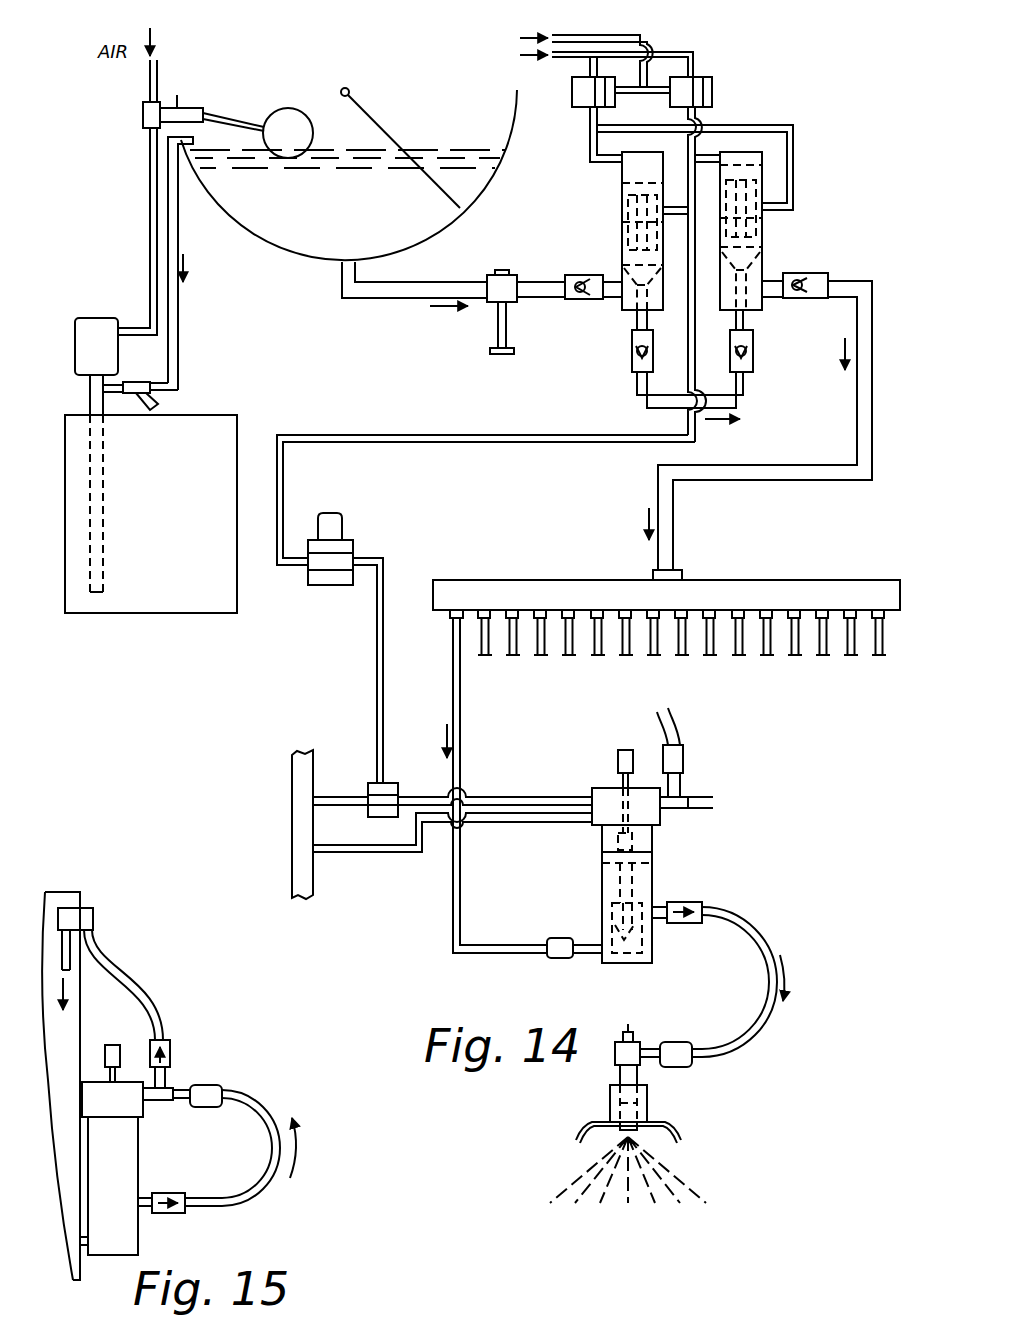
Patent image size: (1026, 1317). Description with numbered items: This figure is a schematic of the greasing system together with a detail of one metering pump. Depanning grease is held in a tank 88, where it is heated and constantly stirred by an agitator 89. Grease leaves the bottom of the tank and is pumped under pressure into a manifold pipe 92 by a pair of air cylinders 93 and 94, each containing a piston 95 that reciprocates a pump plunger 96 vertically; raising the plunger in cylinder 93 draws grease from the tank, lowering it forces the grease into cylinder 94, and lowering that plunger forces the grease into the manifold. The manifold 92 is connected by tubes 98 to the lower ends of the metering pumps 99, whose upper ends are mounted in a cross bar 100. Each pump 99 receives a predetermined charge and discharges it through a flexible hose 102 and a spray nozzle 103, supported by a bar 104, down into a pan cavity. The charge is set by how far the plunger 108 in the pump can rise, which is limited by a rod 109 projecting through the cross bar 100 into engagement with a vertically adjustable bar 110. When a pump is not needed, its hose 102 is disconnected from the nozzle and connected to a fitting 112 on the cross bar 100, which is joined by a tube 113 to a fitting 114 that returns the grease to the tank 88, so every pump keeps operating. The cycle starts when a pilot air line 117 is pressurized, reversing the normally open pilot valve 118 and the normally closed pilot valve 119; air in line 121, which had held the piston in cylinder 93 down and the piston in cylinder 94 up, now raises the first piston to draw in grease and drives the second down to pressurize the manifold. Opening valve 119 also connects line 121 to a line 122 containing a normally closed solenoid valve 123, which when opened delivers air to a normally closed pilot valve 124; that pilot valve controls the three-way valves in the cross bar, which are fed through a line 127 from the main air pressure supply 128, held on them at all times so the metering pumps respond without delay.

In FIG. 14, the tank 88 is at (268, 246).
In FIG. 14, the agitator 89 is at (380, 128).
In FIG. 14, the manifold pipe 92 is at (782, 582).
In FIG. 14, the air cylinder 93 is at (622, 210).
In FIG. 14, the air cylinder 94 is at (765, 228).
In FIG. 14, the piston 95 is at (630, 185).
In FIG. 14, the pump plunger 96 is at (628, 258).
In FIG. 14, the tube 98 is at (465, 712).
In FIG. 15, the tube 98 is at (85, 1256).
In FIG. 14, the metering pump 99 is at (655, 845).
In FIG. 15, the metering pump 99 is at (130, 1170).
In FIG. 14, the cross bar 100 is at (657, 817).
In FIG. 15, the cross bar 100 is at (137, 1105).
In FIG. 14, the flexible hose 102 is at (775, 947).
In FIG. 15, the flexible hose 102 is at (260, 1195).
In FIG. 14, the spray nozzle 103 is at (665, 1132).
In FIG. 14, the bar 104 is at (609, 1111).
In FIG. 14, the plunger 108 is at (612, 858).
In FIG. 14, the rod 109 is at (620, 786).
In FIG. 14, the bar 110 is at (630, 737).
In FIG. 15, the bar 110 is at (122, 1022).
In FIG. 14, the fitting 112 is at (690, 796).
In FIG. 15, the fitting 112 is at (170, 1088).
In FIG. 14, the tube 113 is at (672, 716).
In FIG. 15, the tube 113 is at (148, 994).
In FIG. 15, the fitting 114 is at (90, 910).
In FIG. 14, the pilot air line 117 is at (655, 37).
In FIG. 14, the normally open pilot valve 118 is at (590, 110).
In FIG. 14, the normally closed pilot valve 119 is at (712, 93).
In FIG. 14, the air pressure line 121 is at (572, 57).
In FIG. 14, the line 122 is at (648, 438).
In FIG. 14, the solenoid valve 123 is at (353, 549).
In FIG. 14, the pilot valve 124 is at (376, 783).
In FIG. 14, the line 127 is at (386, 853).
In FIG. 14, the main air pressure supply 128 is at (293, 812).